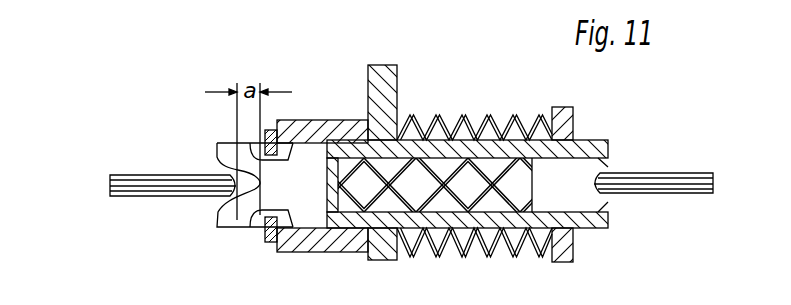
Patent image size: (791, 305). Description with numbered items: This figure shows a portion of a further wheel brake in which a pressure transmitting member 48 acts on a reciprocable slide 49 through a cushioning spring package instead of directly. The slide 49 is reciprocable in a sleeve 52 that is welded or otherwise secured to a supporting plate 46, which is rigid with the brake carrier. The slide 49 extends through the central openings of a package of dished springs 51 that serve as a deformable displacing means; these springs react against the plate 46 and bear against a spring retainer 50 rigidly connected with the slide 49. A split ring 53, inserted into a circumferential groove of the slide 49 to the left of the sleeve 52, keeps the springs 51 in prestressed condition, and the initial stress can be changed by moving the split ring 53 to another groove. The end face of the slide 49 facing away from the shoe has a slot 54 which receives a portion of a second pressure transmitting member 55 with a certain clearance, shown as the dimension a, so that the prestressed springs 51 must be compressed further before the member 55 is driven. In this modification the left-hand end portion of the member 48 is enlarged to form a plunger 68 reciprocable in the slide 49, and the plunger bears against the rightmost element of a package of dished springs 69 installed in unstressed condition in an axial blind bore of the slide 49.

The supporting plate 46 is at (383, 68).
The pressure transmitting member 48 is at (676, 182).
The slide 49 is at (588, 148).
The spring retainer 50 is at (567, 250).
The dished springs 51 is at (483, 114).
The sleeve 52 is at (320, 243).
The split ring 53 is at (271, 244).
The slot 54 is at (250, 184).
The second pressure transmitting member 55 is at (153, 178).
The plunger 68 is at (583, 200).
The dished springs 69 is at (438, 165).